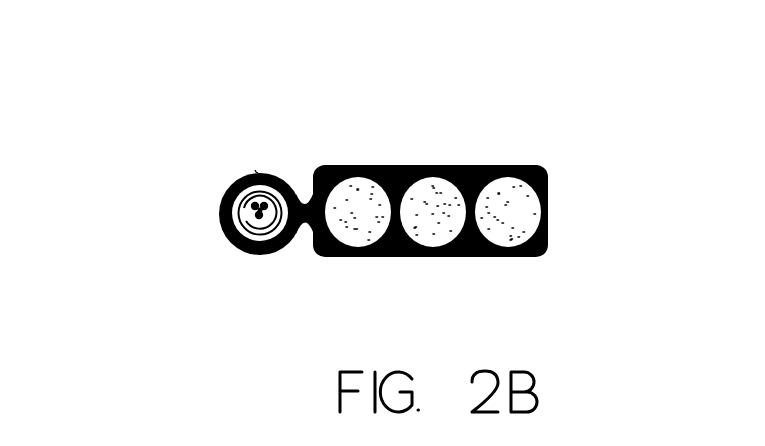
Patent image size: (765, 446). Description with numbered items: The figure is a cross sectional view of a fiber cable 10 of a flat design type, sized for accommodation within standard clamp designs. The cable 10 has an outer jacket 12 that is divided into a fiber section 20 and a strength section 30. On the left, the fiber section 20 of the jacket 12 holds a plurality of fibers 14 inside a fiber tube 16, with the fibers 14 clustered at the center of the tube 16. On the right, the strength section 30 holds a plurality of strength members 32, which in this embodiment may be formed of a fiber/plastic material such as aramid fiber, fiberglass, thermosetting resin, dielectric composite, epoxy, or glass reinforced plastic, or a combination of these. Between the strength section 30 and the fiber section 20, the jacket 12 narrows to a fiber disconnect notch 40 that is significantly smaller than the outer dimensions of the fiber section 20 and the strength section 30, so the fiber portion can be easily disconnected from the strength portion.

The cable 10 is at (125, 75).
The outer jacket 12 is at (256, 172).
The fibers 14 is at (228, 190).
The fiber tube 16 is at (231, 239).
The fiber section 20 is at (270, 256).
The strength section 30 is at (465, 166).
The strength members 32 is at (519, 213).
The fiber disconnect notch 40 is at (305, 222).